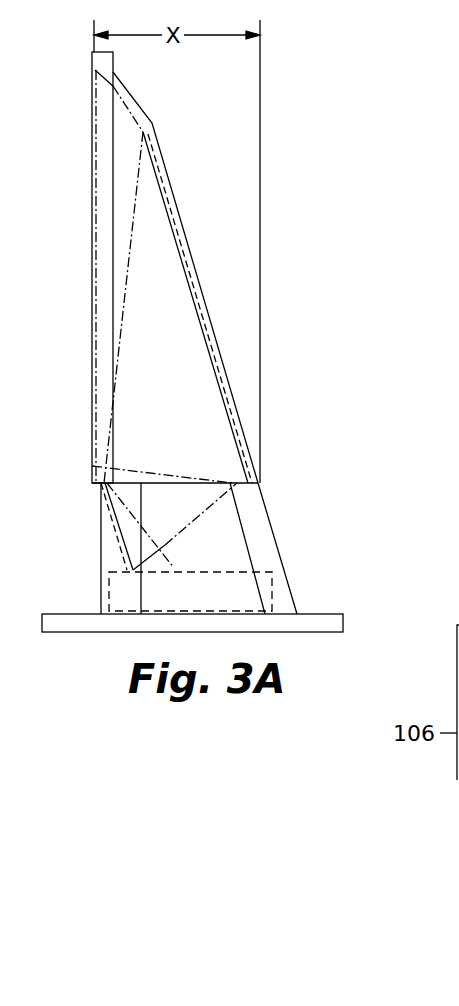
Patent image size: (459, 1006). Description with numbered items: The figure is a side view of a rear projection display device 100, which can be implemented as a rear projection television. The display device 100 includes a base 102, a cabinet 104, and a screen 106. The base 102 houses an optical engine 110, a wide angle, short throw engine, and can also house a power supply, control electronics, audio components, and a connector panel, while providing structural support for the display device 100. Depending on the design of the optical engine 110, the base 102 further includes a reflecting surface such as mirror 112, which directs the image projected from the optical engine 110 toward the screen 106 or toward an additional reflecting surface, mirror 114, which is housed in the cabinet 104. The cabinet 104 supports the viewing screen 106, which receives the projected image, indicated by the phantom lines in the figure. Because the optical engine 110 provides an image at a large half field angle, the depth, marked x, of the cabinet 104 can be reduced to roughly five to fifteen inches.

The rear projection display device 100 is at (307, 150).
The base 102 is at (272, 527).
The cabinet 104 is at (207, 308).
The screen 106 is at (91, 185).
The optical engine 110 is at (118, 590).
The mirror 112 is at (118, 531).
The mirror 114 is at (178, 192).